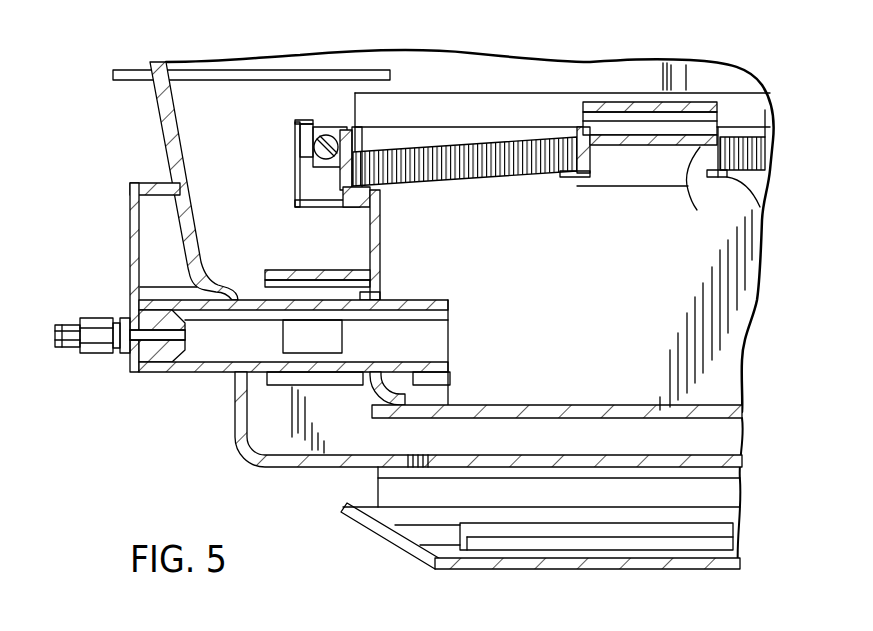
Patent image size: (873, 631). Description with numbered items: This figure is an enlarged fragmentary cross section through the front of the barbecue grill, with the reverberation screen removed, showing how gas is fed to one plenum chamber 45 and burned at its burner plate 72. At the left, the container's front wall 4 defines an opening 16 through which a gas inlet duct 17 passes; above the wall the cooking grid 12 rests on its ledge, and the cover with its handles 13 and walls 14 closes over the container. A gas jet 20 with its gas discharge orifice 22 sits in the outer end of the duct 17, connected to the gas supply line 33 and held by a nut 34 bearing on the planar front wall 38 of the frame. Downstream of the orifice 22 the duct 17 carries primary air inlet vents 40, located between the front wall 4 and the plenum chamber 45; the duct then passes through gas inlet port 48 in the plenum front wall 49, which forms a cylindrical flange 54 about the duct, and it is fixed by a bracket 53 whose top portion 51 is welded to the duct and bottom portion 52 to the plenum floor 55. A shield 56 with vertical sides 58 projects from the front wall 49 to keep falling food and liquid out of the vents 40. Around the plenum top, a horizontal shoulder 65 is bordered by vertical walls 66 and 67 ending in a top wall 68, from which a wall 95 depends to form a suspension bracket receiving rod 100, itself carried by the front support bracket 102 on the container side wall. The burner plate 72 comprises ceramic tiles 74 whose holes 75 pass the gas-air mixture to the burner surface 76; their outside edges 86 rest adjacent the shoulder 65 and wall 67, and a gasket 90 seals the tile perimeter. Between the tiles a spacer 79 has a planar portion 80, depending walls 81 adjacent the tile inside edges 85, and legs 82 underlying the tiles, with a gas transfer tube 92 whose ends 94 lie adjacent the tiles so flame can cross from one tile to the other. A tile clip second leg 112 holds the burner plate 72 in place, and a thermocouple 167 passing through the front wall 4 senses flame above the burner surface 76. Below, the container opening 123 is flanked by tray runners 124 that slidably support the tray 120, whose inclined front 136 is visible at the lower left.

The front wall 4 is at (157, 100).
The cooking grid 12 is at (130, 176).
The handles 13 is at (55, 335).
The walls of cover 14 is at (183, 277).
The openings 16 is at (237, 300).
The gas inlet duct 17 is at (208, 364).
The gas jet 20 is at (157, 364).
The gas discharge orifice 22 is at (187, 362).
The gas supply line 33 is at (68, 328).
The nut 34 is at (130, 352).
The front wall of frame 38 is at (130, 206).
The primary air inlet vents 40 is at (328, 353).
The plenum chamber 45 is at (653, 297).
The gas inlet port 48 is at (382, 300).
The front wall of plenum 49 is at (380, 245).
The top portion of bracket 51 is at (430, 385).
The bottom portion of bracket 52 is at (480, 406).
The bracket 53 is at (450, 386).
The cylindrical flange 54 is at (365, 378).
The floor 55 is at (591, 412).
The shield 56 is at (328, 270).
The vertical sides of shield 58 is at (283, 385).
The shoulder 65 is at (382, 192).
The vertical walls adjacent sides 66 is at (426, 106).
The vertical walls adjacent front and rear walls 67 is at (343, 180).
The top wall 68 is at (329, 135).
The burner plate 72 is at (538, 177).
The tile 74 is at (490, 180).
The holes 75 is at (767, 182).
The burner surface 76 is at (452, 148).
The spacer 79 is at (675, 145).
The planar portion of spacer 80 is at (634, 145).
The downwardly depending walls 81 is at (703, 192).
The legs 82 is at (755, 200).
The inside edges 85 is at (593, 175).
The outside edges 86 is at (335, 200).
The gasket 90 is at (362, 150).
The gas transfer tube 92 is at (636, 102).
The ends of tube 94 is at (576, 127).
The wall 95 is at (300, 143).
The rod 100 is at (323, 160).
The front support bracket 102 is at (295, 125).
The second leg of tile clip 112 is at (462, 93).
The tray 120 is at (528, 569).
The opening 123 is at (560, 456).
The tray runner 124 is at (378, 490).
The inclined front of tray 136 is at (390, 547).
The thermocouple 167 is at (392, 72).